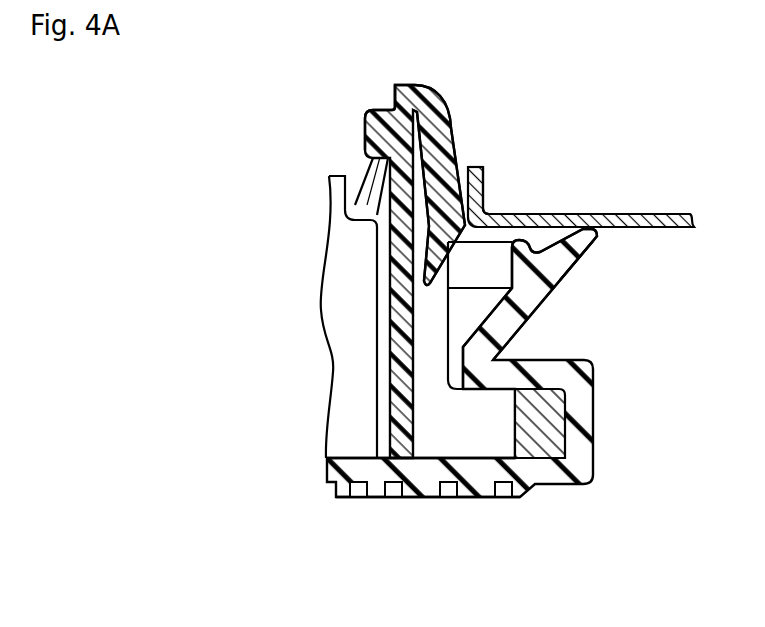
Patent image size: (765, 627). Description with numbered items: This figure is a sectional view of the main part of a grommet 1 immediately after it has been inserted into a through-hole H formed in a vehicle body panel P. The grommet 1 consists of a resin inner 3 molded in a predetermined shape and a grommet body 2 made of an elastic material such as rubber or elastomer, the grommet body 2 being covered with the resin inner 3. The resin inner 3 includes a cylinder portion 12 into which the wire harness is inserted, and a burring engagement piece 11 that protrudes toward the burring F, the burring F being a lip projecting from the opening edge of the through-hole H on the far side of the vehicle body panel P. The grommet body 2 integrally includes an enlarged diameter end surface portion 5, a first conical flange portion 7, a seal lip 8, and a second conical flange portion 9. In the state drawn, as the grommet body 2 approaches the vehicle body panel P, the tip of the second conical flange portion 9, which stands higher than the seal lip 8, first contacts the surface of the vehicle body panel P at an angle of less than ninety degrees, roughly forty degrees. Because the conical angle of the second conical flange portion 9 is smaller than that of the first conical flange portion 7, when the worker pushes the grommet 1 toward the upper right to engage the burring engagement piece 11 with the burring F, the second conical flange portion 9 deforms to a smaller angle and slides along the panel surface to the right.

The grommet 1 is at (471, 319).
The grommet body 2 is at (477, 395).
The resin inner 3 is at (376, 100).
The enlarged diameter end surface portion 5 is at (362, 478).
The first conical flange portion 7 is at (527, 312).
The seal lip 8 is at (550, 270).
The second conical flange portion 9 is at (592, 240).
The burring engagement piece 11 is at (444, 118).
The cylinder portion 12 is at (378, 246).
The through-hole H is at (464, 167).
The burring F is at (484, 186).
The vehicle body panel P is at (637, 214).